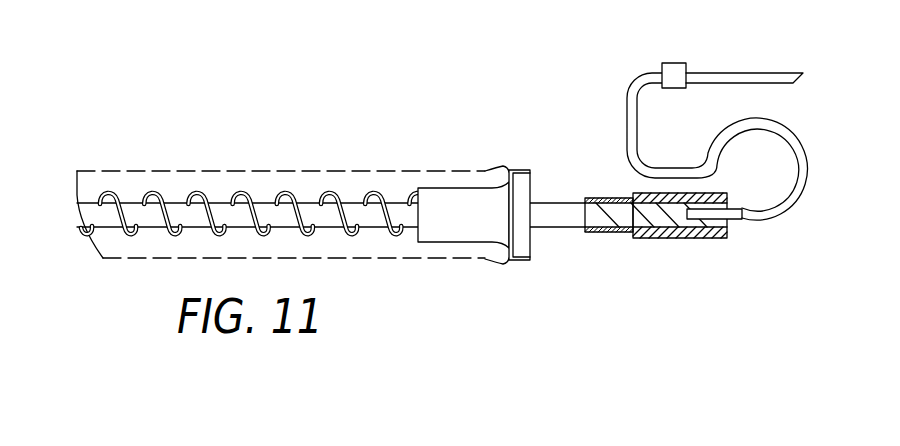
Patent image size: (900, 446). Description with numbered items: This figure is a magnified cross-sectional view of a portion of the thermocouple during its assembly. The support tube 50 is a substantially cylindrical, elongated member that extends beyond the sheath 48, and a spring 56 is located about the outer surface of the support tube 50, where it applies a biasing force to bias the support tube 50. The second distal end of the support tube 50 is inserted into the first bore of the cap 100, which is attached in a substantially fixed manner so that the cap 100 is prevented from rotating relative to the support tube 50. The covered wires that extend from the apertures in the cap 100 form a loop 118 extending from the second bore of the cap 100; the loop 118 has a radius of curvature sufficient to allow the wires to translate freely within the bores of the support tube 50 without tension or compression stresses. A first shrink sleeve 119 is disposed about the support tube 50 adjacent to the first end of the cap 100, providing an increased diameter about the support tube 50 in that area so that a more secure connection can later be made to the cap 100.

The sheath 48 is at (423, 172).
The support tube 50 is at (133, 210).
The spring 56 is at (283, 200).
The cap 100 is at (671, 233).
The loop 118 is at (803, 173).
The first shrink sleeve 119 is at (605, 228).